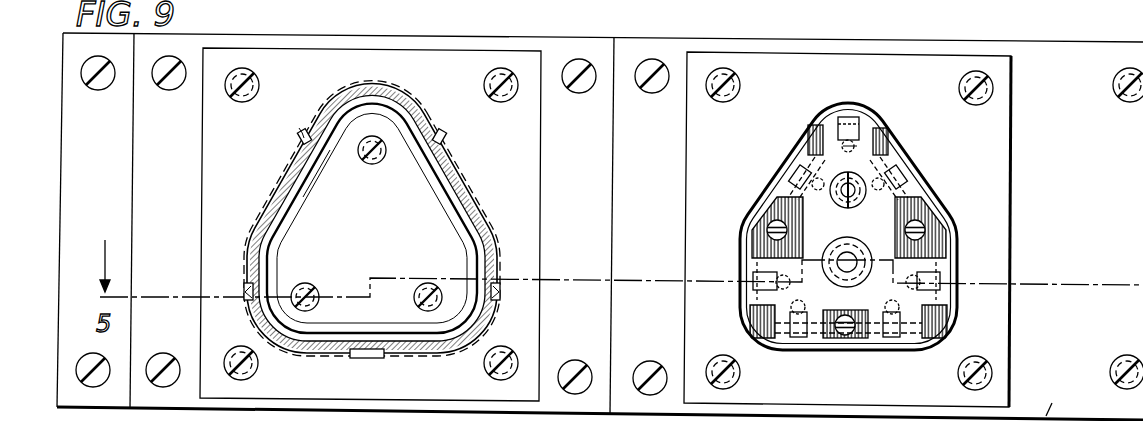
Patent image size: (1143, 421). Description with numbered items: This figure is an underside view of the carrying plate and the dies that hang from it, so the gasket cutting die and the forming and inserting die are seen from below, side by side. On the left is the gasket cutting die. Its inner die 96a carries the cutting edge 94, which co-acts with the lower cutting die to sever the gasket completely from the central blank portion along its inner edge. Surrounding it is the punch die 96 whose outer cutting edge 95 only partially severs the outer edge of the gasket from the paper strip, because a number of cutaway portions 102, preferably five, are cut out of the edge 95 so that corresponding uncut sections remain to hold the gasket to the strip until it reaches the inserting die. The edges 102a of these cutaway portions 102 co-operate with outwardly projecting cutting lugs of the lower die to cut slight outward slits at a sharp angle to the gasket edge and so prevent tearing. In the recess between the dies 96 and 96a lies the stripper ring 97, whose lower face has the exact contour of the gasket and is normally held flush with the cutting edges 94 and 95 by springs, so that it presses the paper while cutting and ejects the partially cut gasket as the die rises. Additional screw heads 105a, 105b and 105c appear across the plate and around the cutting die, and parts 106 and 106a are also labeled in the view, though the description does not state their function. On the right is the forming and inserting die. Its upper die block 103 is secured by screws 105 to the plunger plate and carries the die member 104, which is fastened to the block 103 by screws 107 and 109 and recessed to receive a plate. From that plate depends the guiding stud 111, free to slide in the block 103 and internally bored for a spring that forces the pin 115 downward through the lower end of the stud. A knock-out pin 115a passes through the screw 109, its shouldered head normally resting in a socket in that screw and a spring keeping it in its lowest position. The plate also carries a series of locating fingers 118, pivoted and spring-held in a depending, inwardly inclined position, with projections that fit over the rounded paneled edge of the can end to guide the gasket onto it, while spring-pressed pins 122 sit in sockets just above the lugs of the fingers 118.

The cutting edge 94 is at (299, 197).
The outer cutting edge 95 is at (286, 194).
The punch die 96 is at (290, 168).
The die 96a is at (413, 203).
The stripper ring 97 is at (281, 210).
The cutaway portions 102 is at (300, 139).
The edges of cutaway portions 102a is at (304, 130).
The upper die block 103 is at (1012, 156).
The die member 104 is at (766, 192).
The screws 105 is at (736, 82).
The frame screw 105a is at (176, 60).
The plate screw 105b is at (258, 78).
The inner screw 105c is at (372, 165).
The insulating block 106 is at (900, 220).
The partition 106a is at (613, 181).
The screws 107 is at (765, 229).
The screw 109 is at (867, 171).
The guiding stud 111 is at (840, 244).
The pin 115 is at (852, 257).
The knock-out pin 115a is at (836, 173).
The locating fingers 118 is at (860, 130).
The pins 122 is at (885, 140).